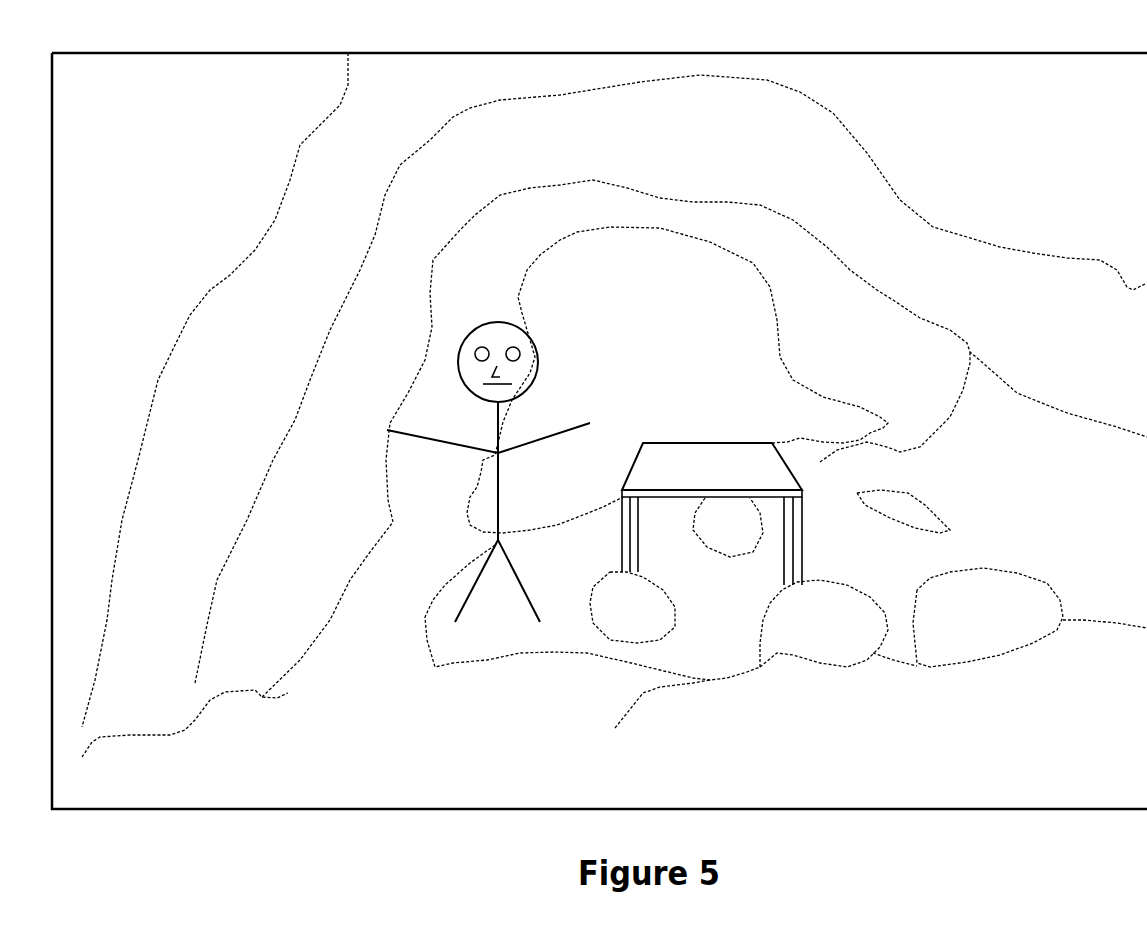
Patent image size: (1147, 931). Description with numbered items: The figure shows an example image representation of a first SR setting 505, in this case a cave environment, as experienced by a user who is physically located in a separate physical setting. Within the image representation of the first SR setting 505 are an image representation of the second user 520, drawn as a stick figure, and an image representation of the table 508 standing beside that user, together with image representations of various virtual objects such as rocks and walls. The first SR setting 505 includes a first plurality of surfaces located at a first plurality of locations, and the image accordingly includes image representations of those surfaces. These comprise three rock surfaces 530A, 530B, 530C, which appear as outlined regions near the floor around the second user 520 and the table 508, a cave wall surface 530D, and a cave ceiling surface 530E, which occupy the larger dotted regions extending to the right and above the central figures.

The first SR setting 505 is at (983, 53).
The table 508 is at (727, 443).
The second user 520 is at (528, 290).
The rock surface 530A is at (665, 624).
The rock surface 530B is at (842, 637).
The rock surface 530C is at (1005, 637).
The cave wall surface 530D is at (1078, 489).
The cave ceiling surface 530E is at (1098, 327).